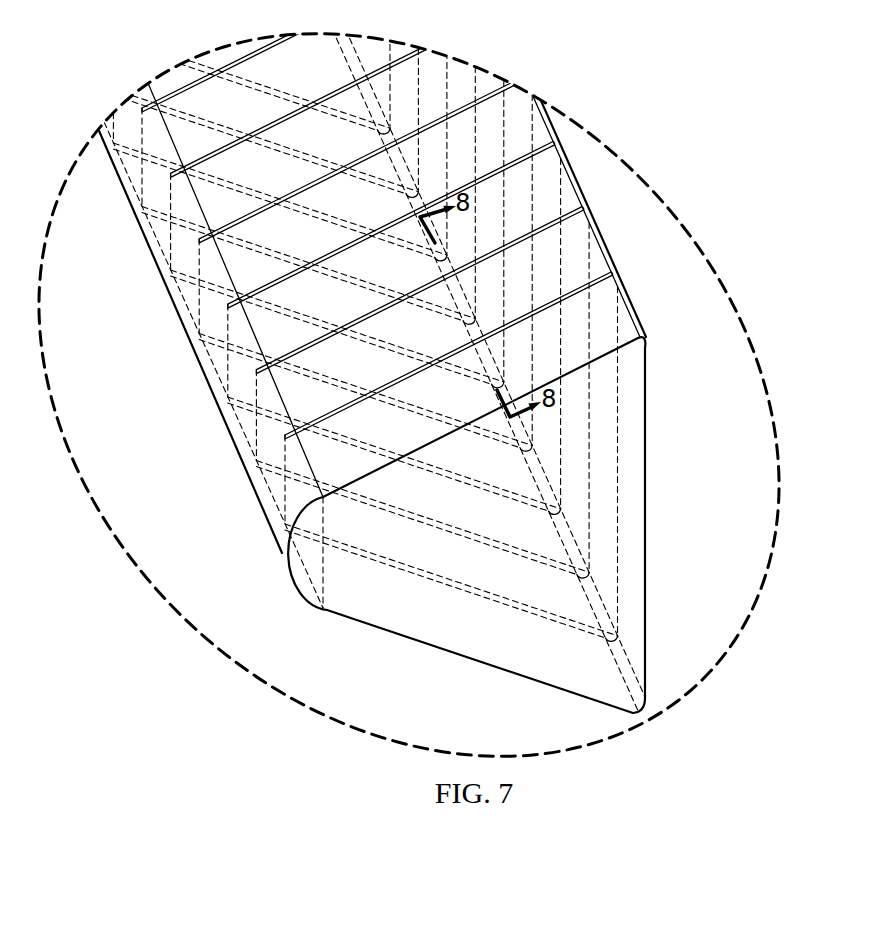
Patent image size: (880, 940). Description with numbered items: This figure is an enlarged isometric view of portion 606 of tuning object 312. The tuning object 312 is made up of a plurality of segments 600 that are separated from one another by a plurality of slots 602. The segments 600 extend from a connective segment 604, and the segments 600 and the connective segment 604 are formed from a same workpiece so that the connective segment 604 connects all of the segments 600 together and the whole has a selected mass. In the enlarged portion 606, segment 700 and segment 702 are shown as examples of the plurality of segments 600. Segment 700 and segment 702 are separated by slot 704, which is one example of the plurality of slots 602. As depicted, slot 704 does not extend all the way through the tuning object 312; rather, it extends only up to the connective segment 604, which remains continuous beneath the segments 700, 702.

The tuning object 312 is at (98, 130).
The plurality of segments 600 is at (620, 251).
The plurality of slots 602 is at (354, 392).
The connective segment 604 is at (228, 441).
The portion 606 is at (218, 655).
The segment 700 is at (603, 328).
The segment 702 is at (573, 247).
The slot 704 is at (437, 356).